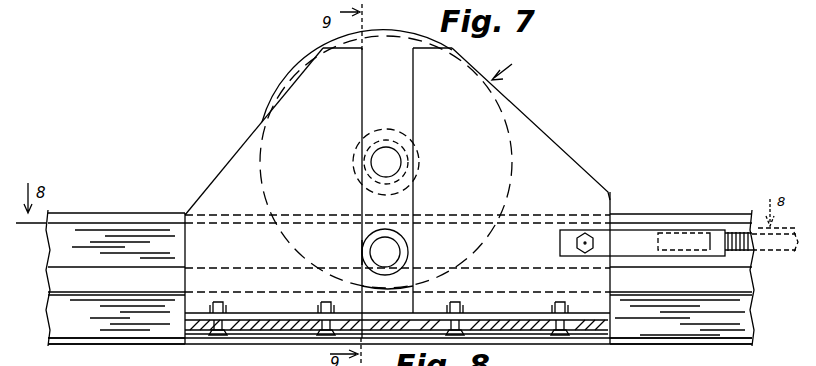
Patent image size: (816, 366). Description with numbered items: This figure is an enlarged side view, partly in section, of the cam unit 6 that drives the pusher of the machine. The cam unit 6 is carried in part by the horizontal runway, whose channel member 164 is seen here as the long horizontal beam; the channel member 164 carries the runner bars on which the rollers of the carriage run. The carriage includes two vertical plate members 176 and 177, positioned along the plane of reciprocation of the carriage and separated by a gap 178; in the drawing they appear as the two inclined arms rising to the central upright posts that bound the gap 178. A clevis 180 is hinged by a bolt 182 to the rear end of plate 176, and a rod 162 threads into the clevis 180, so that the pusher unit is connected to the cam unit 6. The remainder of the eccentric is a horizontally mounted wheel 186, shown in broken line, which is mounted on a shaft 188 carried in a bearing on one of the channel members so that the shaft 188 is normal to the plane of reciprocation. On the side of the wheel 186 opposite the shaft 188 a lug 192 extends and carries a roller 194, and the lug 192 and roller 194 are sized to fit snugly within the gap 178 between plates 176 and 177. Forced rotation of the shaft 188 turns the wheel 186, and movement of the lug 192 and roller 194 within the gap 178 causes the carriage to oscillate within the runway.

The cam unit 6 is at (507, 66).
The rod 162 is at (764, 252).
The channel member 164 is at (722, 340).
The vertical plate member 176 is at (538, 144).
The vertical plate member 177 is at (254, 148).
The gap 178 is at (406, 118).
The clevis 180 is at (652, 232).
The bolt 182 is at (587, 240).
The wheel 186 is at (400, 44).
The shaft 188 is at (392, 166).
The lug 192 is at (408, 252).
The roller 194 is at (368, 254).